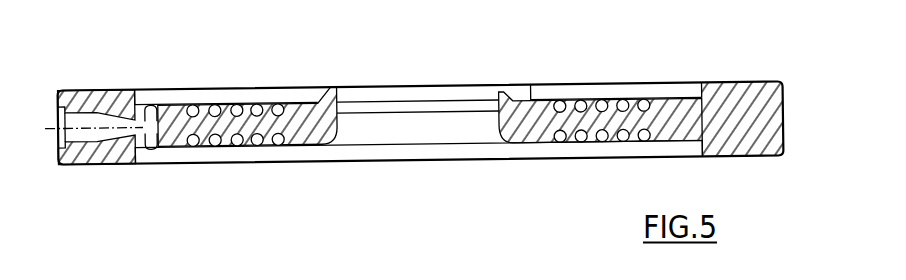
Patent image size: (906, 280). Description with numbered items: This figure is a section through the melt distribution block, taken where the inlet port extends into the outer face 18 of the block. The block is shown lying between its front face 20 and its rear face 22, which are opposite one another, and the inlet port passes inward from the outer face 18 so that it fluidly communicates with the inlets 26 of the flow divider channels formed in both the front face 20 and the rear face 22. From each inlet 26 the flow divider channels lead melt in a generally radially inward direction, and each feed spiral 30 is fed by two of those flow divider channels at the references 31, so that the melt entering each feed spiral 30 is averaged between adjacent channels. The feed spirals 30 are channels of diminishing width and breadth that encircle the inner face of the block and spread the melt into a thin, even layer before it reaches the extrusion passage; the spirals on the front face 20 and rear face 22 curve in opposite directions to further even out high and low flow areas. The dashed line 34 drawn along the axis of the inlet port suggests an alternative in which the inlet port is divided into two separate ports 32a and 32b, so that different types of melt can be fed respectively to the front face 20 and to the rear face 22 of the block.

The outer face 18 is at (783, 121).
The front face 20 is at (530, 103).
The rear face 22 is at (538, 145).
The inlet 26 is at (153, 103).
The feed spiral 30 is at (277, 104).
The references where feed spiral communicates with flow divider channels 31 is at (200, 103).
The separate port 32a is at (88, 104).
The separate port 32b is at (91, 131).
The dashed line 34 is at (48, 124).